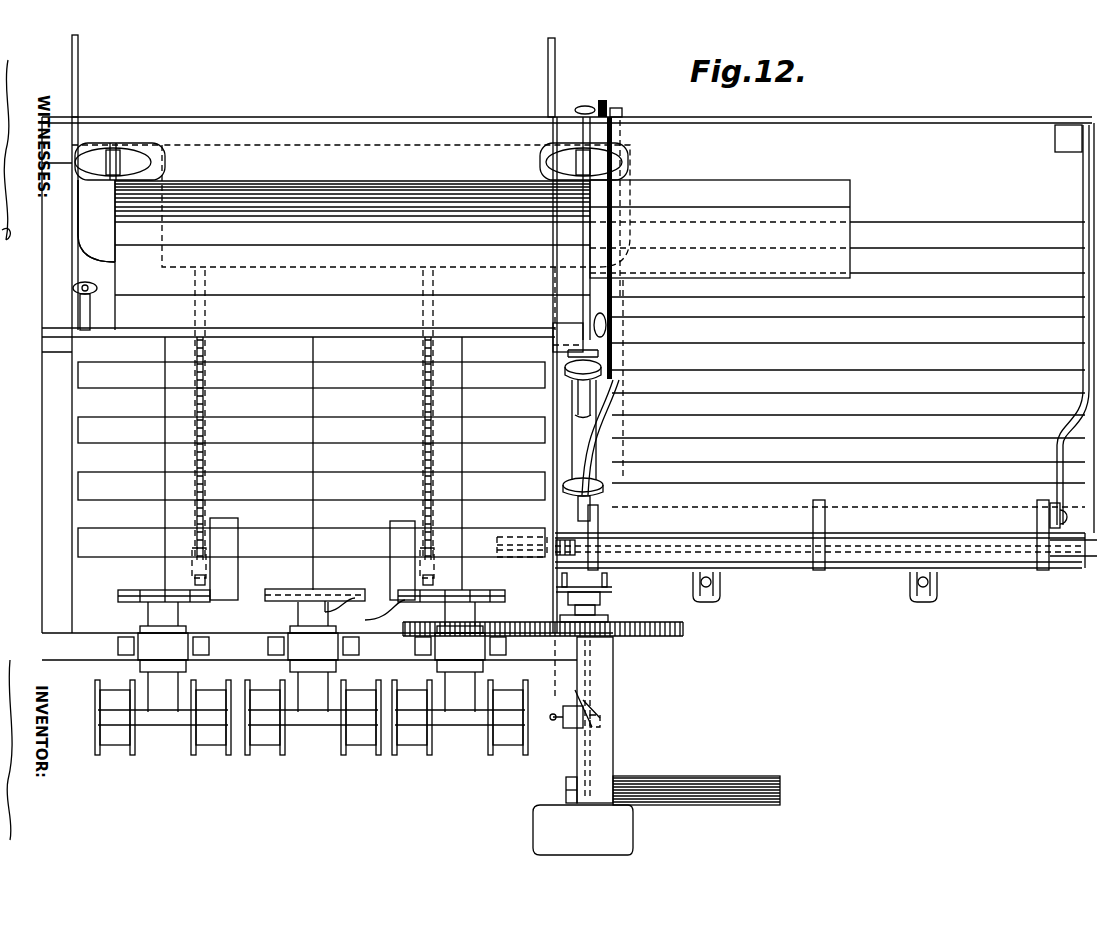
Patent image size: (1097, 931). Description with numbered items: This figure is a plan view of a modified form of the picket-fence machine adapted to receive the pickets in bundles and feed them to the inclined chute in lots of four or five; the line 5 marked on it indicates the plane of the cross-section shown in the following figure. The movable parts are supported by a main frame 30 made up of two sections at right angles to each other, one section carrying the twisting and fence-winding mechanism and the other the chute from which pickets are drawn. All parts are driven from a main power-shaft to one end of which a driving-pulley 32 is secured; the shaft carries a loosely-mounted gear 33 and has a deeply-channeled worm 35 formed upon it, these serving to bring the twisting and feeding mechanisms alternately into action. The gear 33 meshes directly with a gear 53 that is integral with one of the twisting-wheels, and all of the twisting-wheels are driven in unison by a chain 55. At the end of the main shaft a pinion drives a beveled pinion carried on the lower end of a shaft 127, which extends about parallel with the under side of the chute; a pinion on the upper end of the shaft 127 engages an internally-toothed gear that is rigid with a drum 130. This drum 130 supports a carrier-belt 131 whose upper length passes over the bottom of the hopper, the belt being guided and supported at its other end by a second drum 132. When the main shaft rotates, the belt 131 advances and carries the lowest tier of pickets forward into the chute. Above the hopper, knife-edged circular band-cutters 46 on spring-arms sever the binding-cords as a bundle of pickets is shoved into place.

The section line 5- 5 is at (873, 117).
The main frame 30 is at (696, 790).
The driving-pulley 32 is at (583, 830).
The gear 33 is at (683, 629).
The worm 35 is at (572, 700).
The band-cutters 46 is at (72, 288).
The gear 53 is at (500, 622).
The chain 55 is at (283, 589).
The shaft 127 is at (583, 460).
The drum 130 is at (540, 163).
The carrier-belt 131 is at (96, 221).
The second drum 132 is at (150, 162).